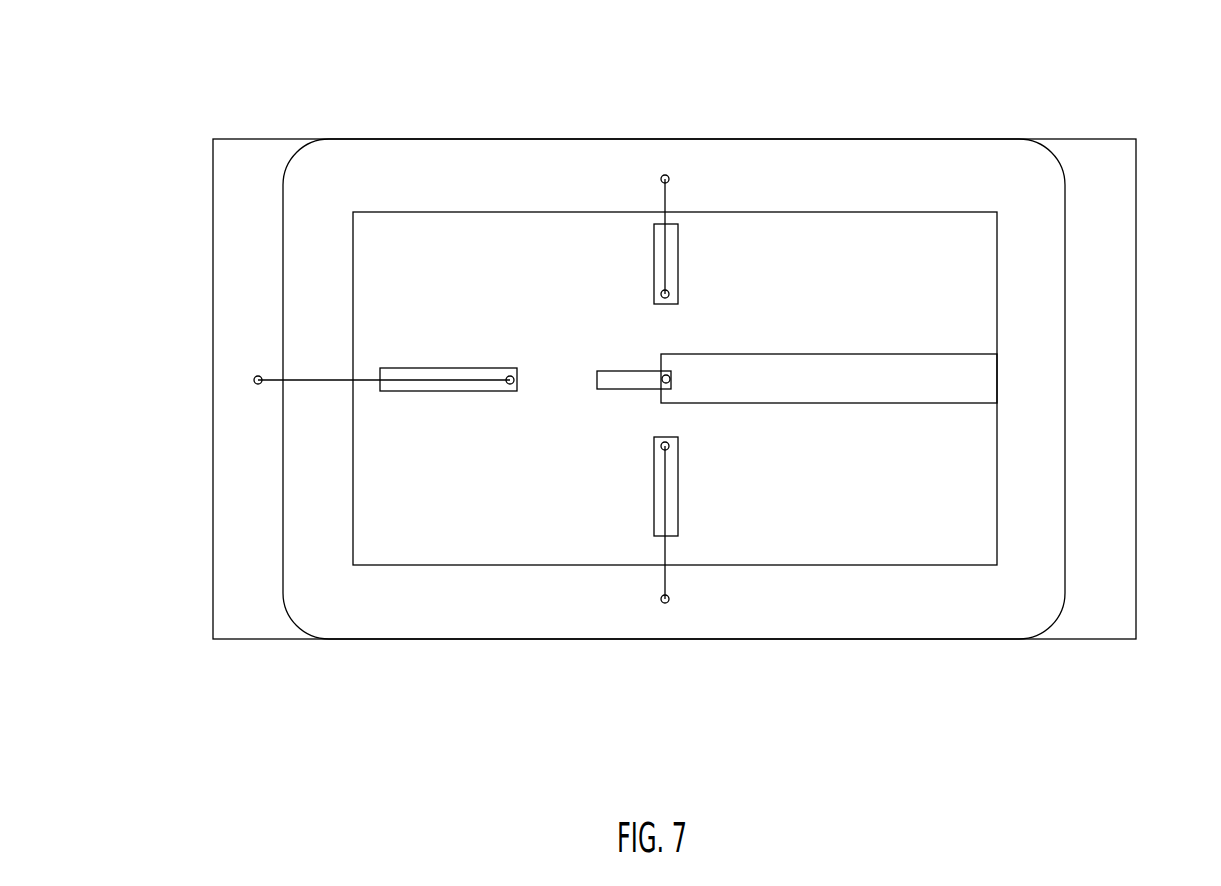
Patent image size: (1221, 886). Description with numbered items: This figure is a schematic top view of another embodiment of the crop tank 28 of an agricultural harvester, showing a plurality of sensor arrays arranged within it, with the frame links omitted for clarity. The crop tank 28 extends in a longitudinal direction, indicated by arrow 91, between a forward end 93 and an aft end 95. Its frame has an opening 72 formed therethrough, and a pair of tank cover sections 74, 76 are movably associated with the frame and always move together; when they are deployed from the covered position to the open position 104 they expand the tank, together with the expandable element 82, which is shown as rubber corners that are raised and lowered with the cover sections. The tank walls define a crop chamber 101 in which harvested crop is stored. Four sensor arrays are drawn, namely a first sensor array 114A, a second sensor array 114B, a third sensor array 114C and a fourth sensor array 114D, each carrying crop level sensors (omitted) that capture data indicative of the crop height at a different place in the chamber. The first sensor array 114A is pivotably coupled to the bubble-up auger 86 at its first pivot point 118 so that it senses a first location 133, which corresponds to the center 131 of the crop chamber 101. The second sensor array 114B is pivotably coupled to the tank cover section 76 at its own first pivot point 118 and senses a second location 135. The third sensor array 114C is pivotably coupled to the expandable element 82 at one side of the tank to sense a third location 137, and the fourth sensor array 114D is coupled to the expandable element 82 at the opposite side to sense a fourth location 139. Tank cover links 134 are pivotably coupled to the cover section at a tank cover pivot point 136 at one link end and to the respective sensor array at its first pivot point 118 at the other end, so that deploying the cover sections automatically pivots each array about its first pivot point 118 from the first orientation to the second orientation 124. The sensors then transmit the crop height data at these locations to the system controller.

The crop tank 28 is at (470, 50).
The opening 72 is at (960, 105).
The tank cover section 74 is at (1105, 395).
The tank cover section 76 is at (255, 445).
The expandable element 82 is at (790, 183).
The bubble-up auger 86 is at (858, 395).
The longitudinal direction arrow 91 is at (850, 741).
The forward end 93 is at (186, 528).
The aft end 95 is at (1157, 297).
The crop chamber 101 is at (763, 55).
The open position 104 is at (310, 102).
The first sensor array 114A is at (623, 371).
The second sensor array 114B is at (415, 368).
The third sensor array 114C is at (678, 497).
The fourth sensor array 114D is at (678, 250).
The first pivot point 118 is at (668, 294).
The second orientation 124 is at (775, 222).
The center 131 is at (652, 400).
The first location 133 is at (652, 400).
The tank cover link 134 is at (665, 203).
The second location 135 is at (450, 403).
The tank cover pivot point 136 is at (665, 175).
The third location 137 is at (618, 280).
The fourth location 139 is at (622, 495).